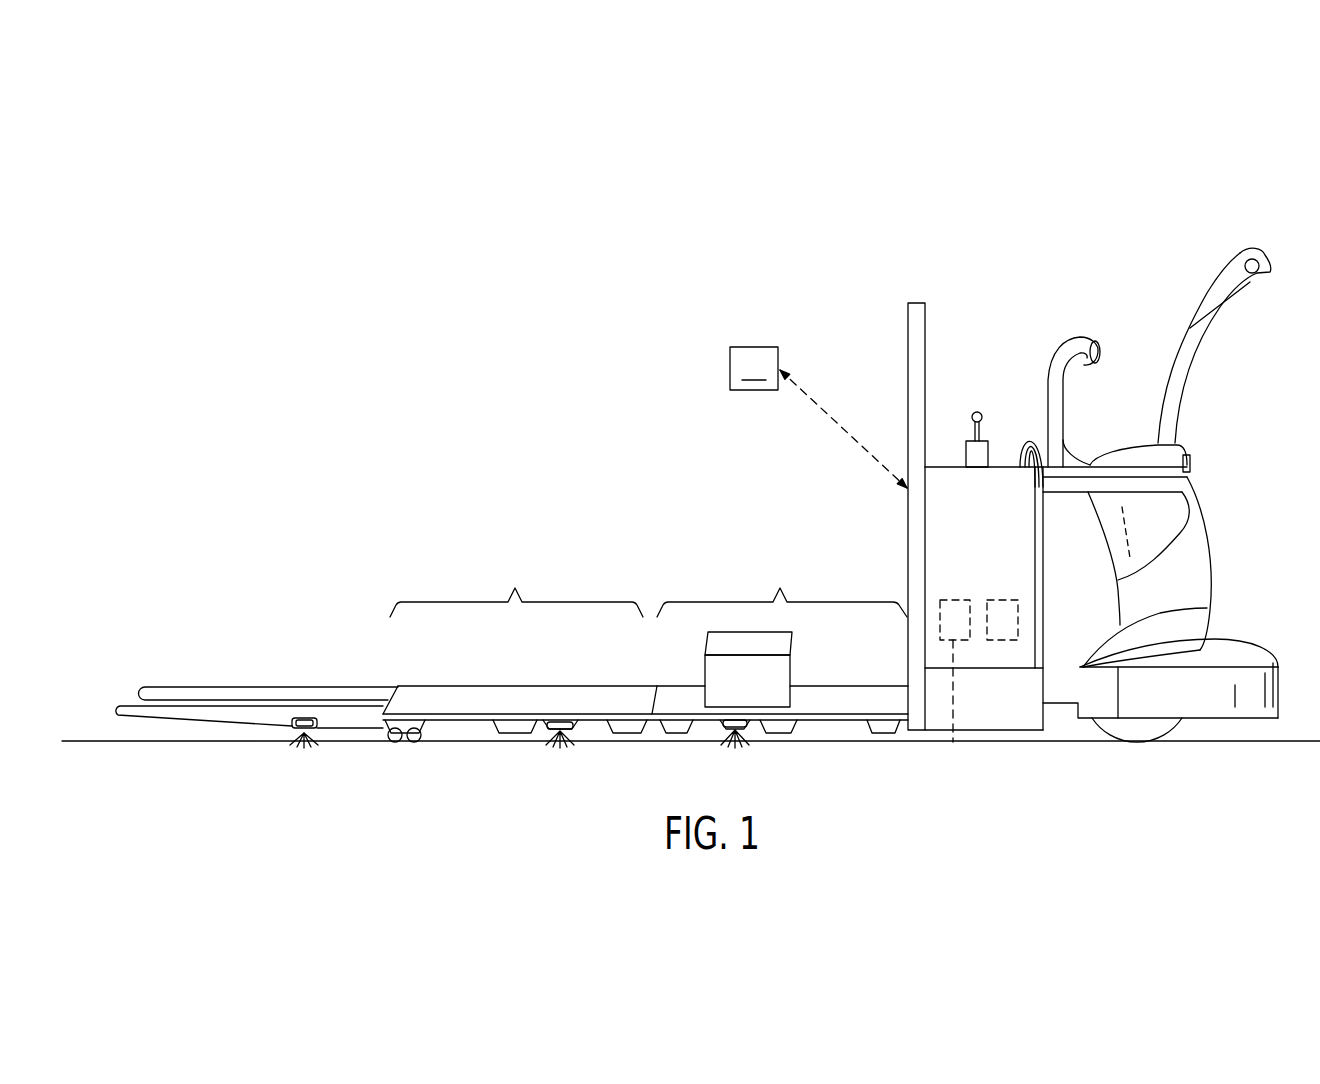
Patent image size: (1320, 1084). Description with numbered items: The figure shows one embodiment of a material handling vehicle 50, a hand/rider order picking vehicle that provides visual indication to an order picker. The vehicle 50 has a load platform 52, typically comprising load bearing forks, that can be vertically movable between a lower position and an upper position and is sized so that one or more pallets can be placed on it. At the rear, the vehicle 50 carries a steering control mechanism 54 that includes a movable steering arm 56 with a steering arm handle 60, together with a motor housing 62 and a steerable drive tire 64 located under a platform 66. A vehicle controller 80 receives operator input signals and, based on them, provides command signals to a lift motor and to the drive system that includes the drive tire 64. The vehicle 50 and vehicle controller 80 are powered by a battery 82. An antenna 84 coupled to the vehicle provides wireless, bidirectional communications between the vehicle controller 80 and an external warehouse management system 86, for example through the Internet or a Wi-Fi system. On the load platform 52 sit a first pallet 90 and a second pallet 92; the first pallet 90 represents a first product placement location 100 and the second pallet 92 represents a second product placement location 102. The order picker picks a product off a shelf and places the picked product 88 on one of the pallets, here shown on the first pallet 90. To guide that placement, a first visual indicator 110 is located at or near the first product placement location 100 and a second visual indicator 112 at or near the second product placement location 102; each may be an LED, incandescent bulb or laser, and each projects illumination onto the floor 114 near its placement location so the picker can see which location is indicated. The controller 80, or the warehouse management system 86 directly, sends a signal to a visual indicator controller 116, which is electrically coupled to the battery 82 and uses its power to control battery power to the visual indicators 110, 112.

The material handling vehicle 50 is at (863, 358).
The load platform 52 is at (263, 697).
The steering control mechanism 54 is at (1218, 262).
The steering arm 56 is at (1182, 362).
The steering arm handle 60 is at (1255, 283).
The motor housing 62 is at (1208, 540).
The steerable drive tire 64 is at (1145, 728).
The platform 66 is at (1228, 650).
The vehicle controller 80 is at (1000, 640).
The battery 82 is at (948, 467).
The antenna 84 is at (978, 413).
The warehouse management system 86 is at (818, 417).
The picked product 88 is at (717, 673).
The first pallet 90 is at (832, 697).
The second pallet 92 is at (517, 698).
The first product placement location 100 is at (782, 586).
The second product placement location 102 is at (516, 586).
The first visual indicator 110 is at (733, 730).
The second visual indicator 112 is at (558, 730).
The floor 114 is at (205, 743).
The visual indicator controller 116 is at (952, 742).